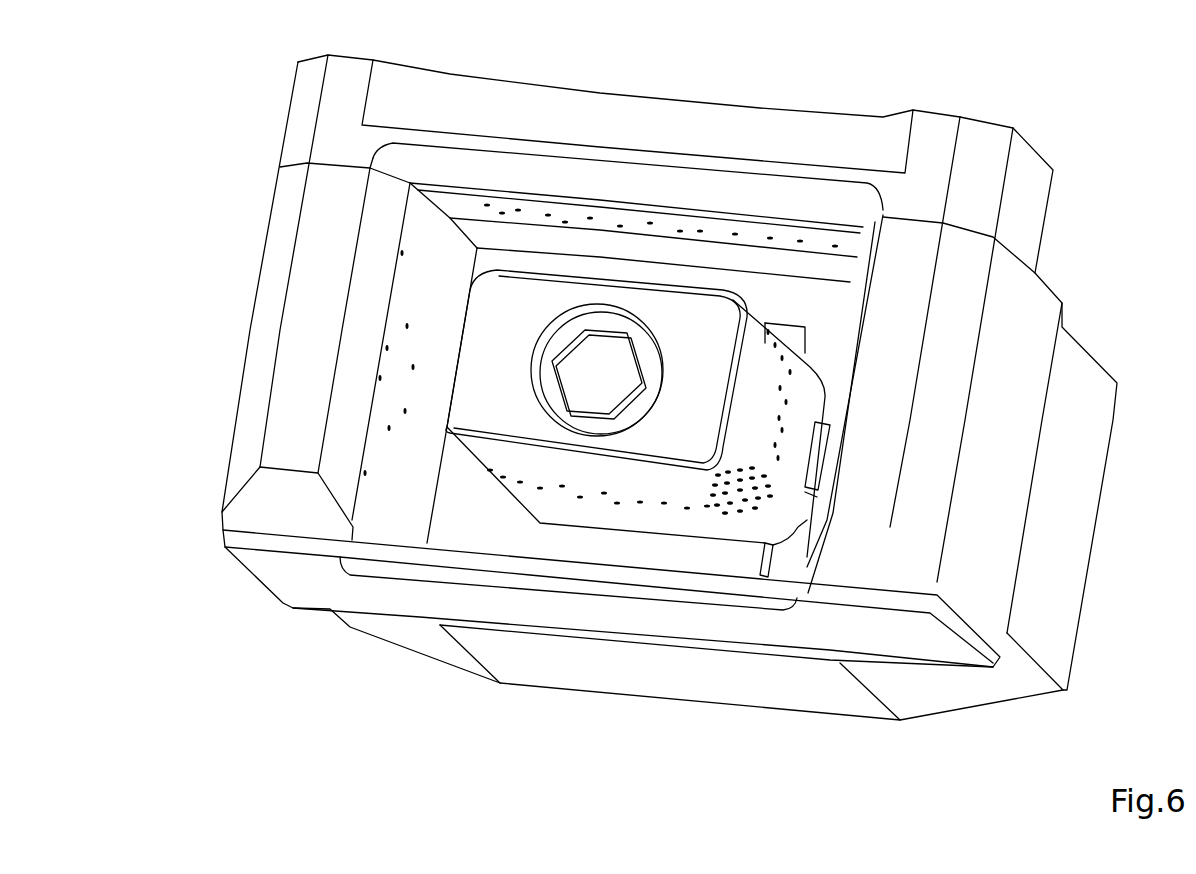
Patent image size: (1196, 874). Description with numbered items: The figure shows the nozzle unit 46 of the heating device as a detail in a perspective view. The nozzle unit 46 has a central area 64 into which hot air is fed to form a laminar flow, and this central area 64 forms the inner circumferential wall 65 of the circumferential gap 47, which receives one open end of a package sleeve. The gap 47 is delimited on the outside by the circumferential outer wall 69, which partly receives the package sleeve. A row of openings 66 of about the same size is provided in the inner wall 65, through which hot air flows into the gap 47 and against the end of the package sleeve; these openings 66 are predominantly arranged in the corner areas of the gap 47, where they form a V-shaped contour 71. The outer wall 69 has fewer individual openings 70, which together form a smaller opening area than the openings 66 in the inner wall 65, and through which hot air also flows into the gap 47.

The nozzle unit 46 is at (157, 621).
The gap 47 is at (797, 309).
The central area 64 is at (507, 342).
The inner circumferential wall 65 is at (560, 513).
The openings 66 is at (617, 503).
The circumferential outer wall 69 is at (402, 482).
The openings 70 is at (688, 225).
The V-shaped contour 71 is at (710, 535).